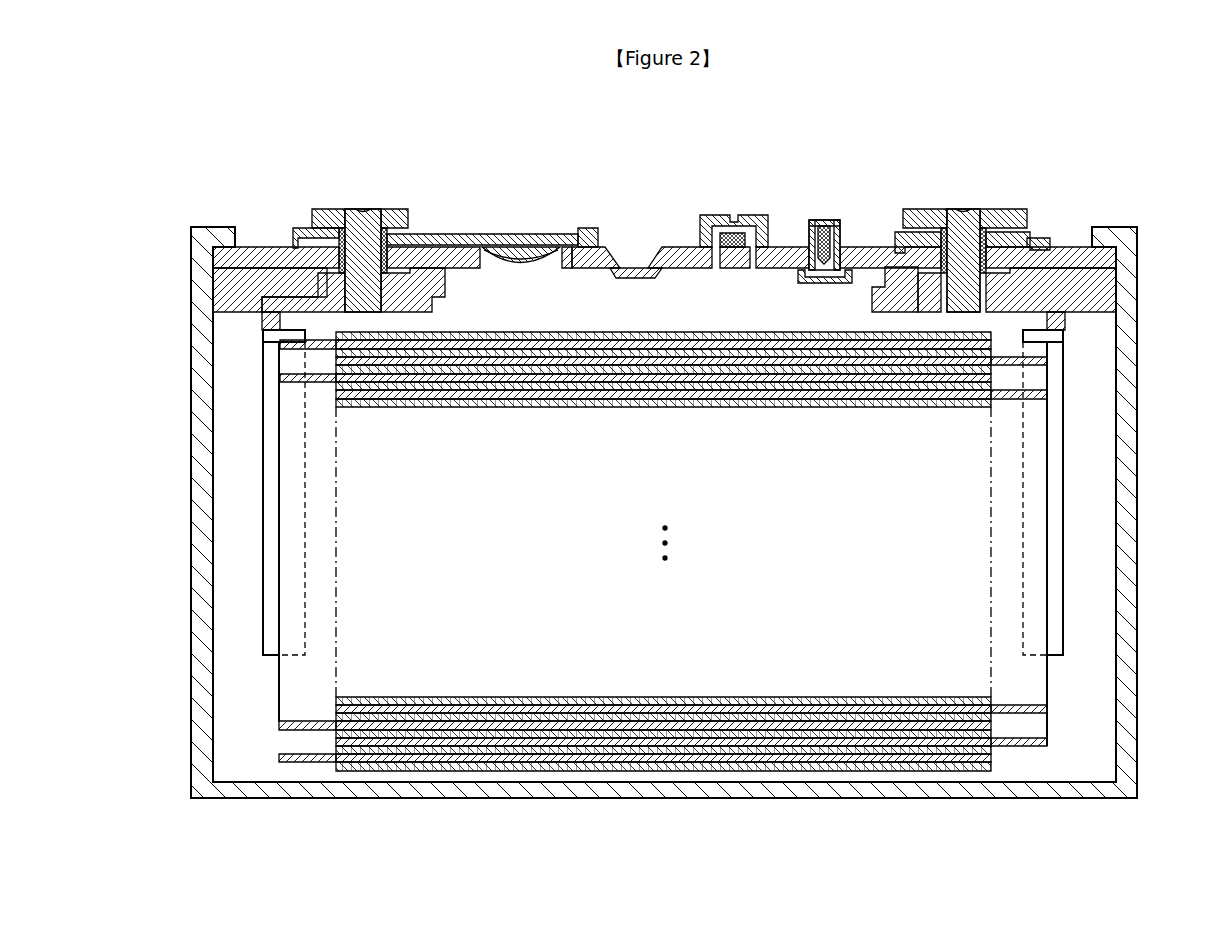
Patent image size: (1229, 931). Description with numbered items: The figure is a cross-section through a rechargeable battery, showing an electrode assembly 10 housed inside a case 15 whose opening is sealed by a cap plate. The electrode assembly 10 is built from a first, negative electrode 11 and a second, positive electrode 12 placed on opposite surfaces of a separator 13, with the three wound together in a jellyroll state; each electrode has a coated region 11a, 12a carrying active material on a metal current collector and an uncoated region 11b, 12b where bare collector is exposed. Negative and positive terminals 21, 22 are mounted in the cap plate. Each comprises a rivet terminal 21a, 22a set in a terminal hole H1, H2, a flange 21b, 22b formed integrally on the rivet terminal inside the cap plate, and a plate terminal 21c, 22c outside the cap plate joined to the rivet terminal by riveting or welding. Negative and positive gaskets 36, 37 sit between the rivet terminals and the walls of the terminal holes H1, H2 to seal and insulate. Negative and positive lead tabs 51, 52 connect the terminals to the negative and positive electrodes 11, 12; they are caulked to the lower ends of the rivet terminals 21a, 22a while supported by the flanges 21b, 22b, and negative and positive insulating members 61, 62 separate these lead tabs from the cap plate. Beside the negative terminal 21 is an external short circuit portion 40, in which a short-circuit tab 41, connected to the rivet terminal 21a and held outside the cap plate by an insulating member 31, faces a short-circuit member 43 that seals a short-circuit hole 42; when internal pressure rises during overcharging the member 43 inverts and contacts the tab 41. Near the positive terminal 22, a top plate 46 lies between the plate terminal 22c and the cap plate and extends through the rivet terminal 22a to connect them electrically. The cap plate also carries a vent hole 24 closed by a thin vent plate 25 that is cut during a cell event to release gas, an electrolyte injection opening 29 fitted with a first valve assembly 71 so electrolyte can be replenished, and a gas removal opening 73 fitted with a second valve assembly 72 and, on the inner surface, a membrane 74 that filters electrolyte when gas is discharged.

The electrode assembly 10 is at (668, 605).
The first electrode 11 is at (635, 609).
The coated region 11a is at (440, 765).
The uncoated region 11b is at (307, 591).
The second electrode 12 is at (697, 615).
The coated region 12a is at (905, 745).
The uncoated region 12b is at (1024, 597).
The separator 13 is at (668, 605).
The case 15 is at (1137, 440).
The negative terminal 21 is at (359, 308).
The rivet terminal 21a is at (378, 300).
The flange 21b is at (425, 262).
The plate terminal 21c is at (395, 222).
The positive terminal 22 is at (1019, 254).
The rivet terminal 22a is at (965, 300).
The flange 22b is at (900, 295).
The plate terminal 22c is at (1010, 220).
The vent hole 24 is at (633, 248).
The vent plate 25 is at (636, 278).
The electrolyte injection opening 29 is at (715, 268).
The insulating member 31 is at (585, 228).
The negative gasket 36 is at (330, 260).
The positive gasket 37 is at (915, 230).
The external short circuit portion 40 is at (494, 227).
The short-circuit tab 41 is at (476, 234).
The short-circuit hole 42 is at (567, 265).
The short-circuit member 43 is at (510, 262).
The top plate 46 is at (1040, 244).
The negative lead tab 51 is at (255, 457).
The positive lead tab 52 is at (1070, 620).
The negative insulating member 61 is at (228, 290).
The positive insulating member 62 is at (1095, 290).
The first valve assembly 71 is at (737, 226).
The second valve assembly 72 is at (833, 232).
The gas removal opening 73 is at (845, 245).
The membrane 74 is at (820, 280).
The terminal hole H1 is at (330, 225).
The terminal hole H2 is at (985, 225).